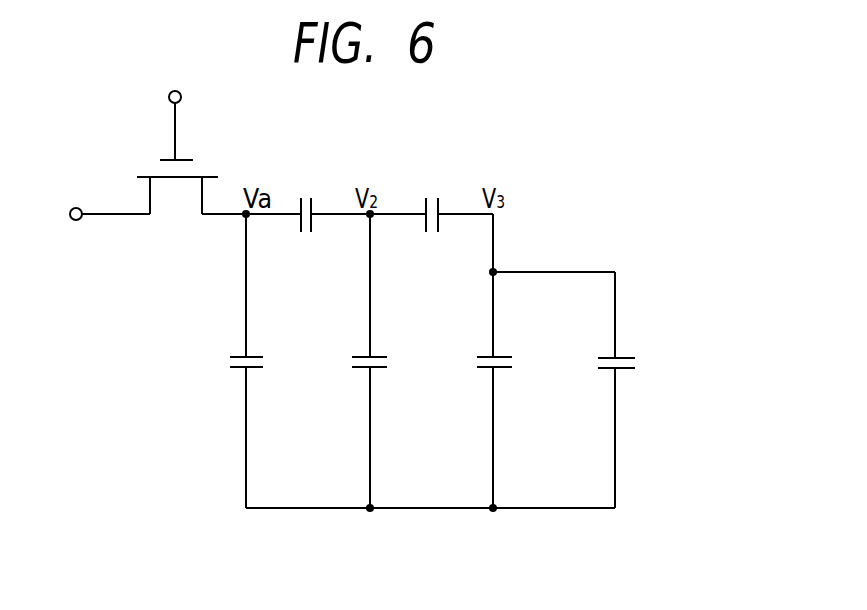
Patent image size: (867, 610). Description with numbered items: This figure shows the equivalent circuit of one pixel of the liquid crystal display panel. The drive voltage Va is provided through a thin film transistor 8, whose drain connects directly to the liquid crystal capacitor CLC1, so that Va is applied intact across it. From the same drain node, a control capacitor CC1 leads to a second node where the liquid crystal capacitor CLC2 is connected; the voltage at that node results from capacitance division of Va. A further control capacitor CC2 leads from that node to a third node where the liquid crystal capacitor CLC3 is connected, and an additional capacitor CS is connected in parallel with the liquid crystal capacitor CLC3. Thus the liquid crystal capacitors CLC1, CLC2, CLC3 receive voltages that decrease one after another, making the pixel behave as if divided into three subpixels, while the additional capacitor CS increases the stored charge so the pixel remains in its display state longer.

The thin film transistor 8 is at (212, 158).
The control capacitor CC1 is at (301, 197).
The control capacitor CC2 is at (420, 197).
The liquid crystal capacitor CLC1 is at (227, 346).
The liquid crystal capacitor CLC2 is at (349, 346).
The liquid crystal capacitor CLC3 is at (472, 347).
The additional capacitor CS is at (606, 347).